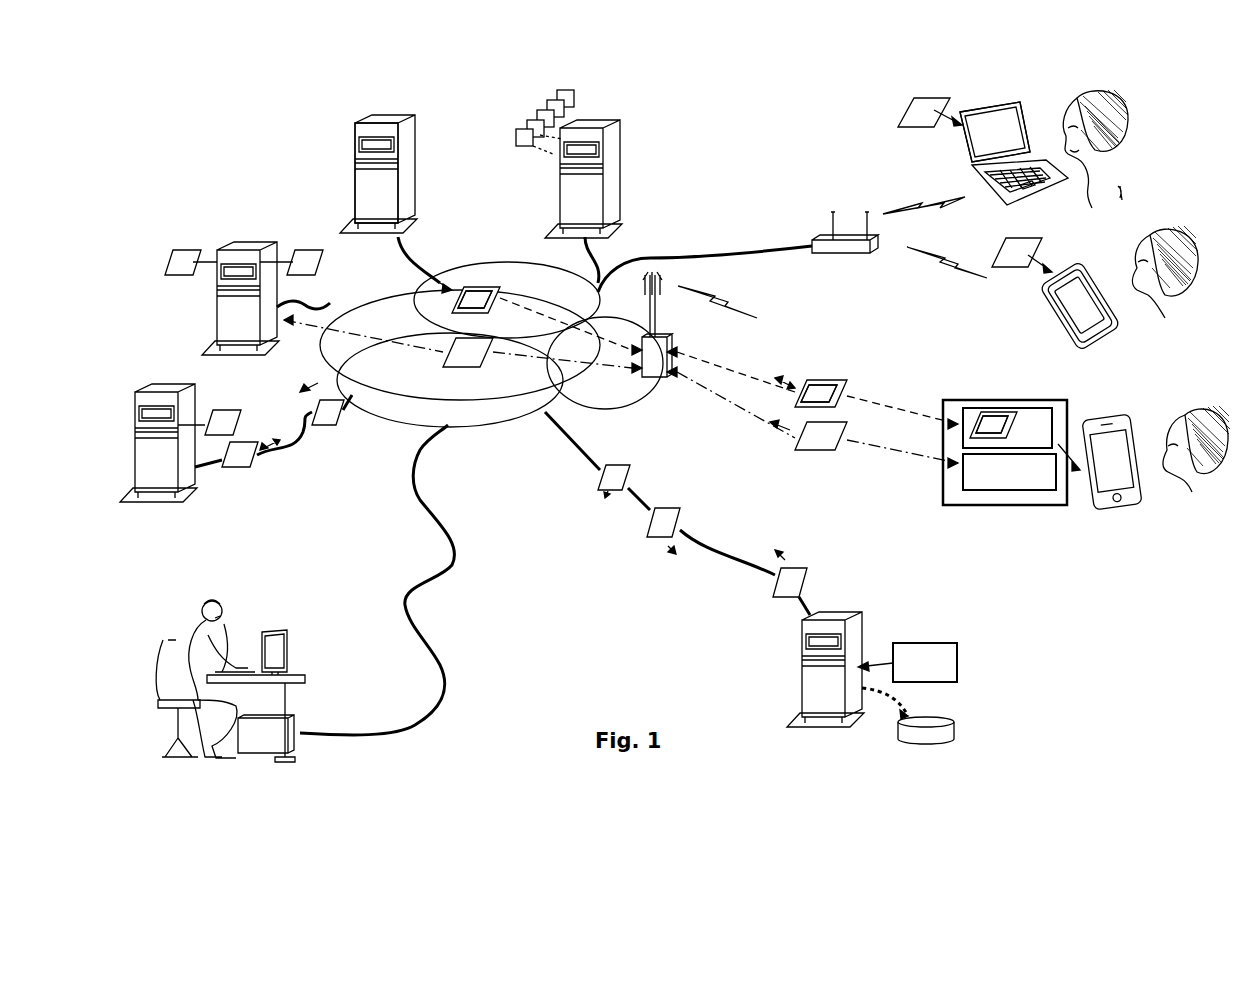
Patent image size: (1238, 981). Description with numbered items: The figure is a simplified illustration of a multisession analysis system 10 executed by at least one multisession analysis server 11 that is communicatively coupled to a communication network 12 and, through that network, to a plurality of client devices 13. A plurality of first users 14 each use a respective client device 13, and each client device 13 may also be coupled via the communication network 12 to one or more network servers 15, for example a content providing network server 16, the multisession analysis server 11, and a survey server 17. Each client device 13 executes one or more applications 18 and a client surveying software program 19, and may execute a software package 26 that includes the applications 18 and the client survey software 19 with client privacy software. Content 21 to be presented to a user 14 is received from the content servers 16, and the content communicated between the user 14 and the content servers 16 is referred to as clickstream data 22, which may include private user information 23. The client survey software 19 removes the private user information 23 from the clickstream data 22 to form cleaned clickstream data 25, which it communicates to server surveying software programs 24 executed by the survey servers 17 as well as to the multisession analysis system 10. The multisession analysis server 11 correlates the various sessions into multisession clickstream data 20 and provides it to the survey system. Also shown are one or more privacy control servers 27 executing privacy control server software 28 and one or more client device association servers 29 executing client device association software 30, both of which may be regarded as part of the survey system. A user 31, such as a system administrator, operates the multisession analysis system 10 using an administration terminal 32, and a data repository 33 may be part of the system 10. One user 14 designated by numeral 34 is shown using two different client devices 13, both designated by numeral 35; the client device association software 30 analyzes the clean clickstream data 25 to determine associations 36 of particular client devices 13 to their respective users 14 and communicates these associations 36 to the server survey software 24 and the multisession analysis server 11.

The multisession analysis system 10 is at (945, 635).
The multisession analysis server 11 is at (802, 659).
The communication network 12 is at (482, 434).
The client device 13 is at (962, 146).
The first user 14 is at (1094, 196).
The network server 15 is at (416, 162).
The content providing network server 16 is at (416, 199).
The survey server 17 is at (136, 433).
The application 18 is at (958, 443).
The client surveying software program 19 is at (958, 483).
The multisession clickstream data 20 is at (809, 578).
The content 21 is at (540, 87).
The clickstream data 22 is at (498, 284).
The private user information 23 is at (469, 284).
The server surveying software program 24 is at (214, 412).
The cleaned clickstream data 25 is at (240, 470).
The software package 26 is at (901, 113).
The privacy control server 27 is at (282, 304).
The privacy control server software 28 is at (292, 250).
The client device association server 29 is at (214, 305).
The client device association software 30 is at (172, 250).
The user 31 is at (216, 600).
The administration terminal 32 is at (294, 698).
The data repository 33 is at (942, 725).
The user designated by numeral 34 is at (1114, 168).
The client devices designated by numeral 35 is at (974, 171).
The associations 36 is at (316, 436).